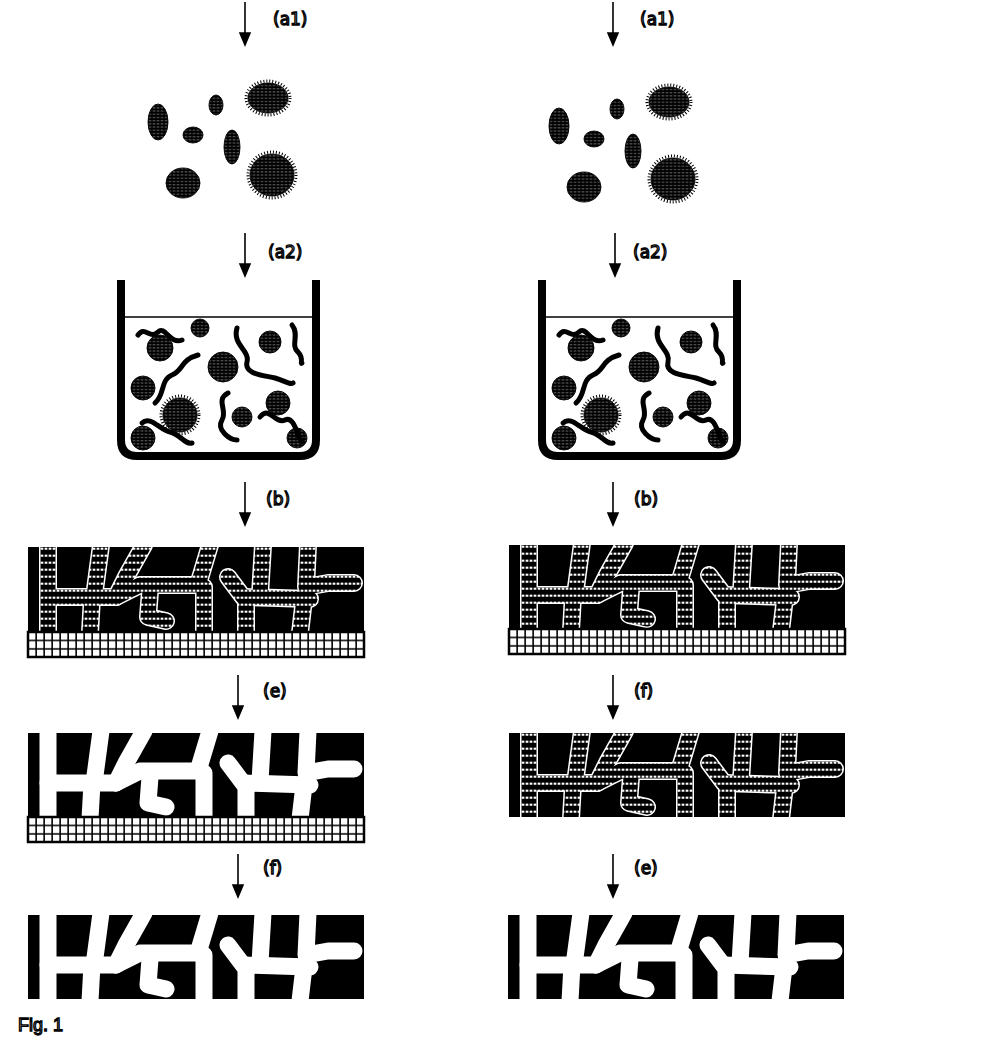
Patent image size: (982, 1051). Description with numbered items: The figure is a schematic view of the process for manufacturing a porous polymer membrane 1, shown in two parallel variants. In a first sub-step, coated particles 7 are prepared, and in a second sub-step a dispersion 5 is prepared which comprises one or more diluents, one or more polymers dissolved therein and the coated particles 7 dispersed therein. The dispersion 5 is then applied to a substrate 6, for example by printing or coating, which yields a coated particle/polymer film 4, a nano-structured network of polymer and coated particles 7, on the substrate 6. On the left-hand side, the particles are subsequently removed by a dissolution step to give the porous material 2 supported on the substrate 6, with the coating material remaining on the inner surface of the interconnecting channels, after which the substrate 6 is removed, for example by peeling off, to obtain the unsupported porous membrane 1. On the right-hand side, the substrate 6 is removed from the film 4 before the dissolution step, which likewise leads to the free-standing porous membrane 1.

The porous membrane 1 is at (558, 958).
The porous material 2 is at (365, 765).
The nano-structured network of polymer and coated particles 4 is at (355, 545).
The dispersion 5 is at (583, 395).
The substrate 6 is at (510, 650).
The coated particles 7 is at (590, 162).